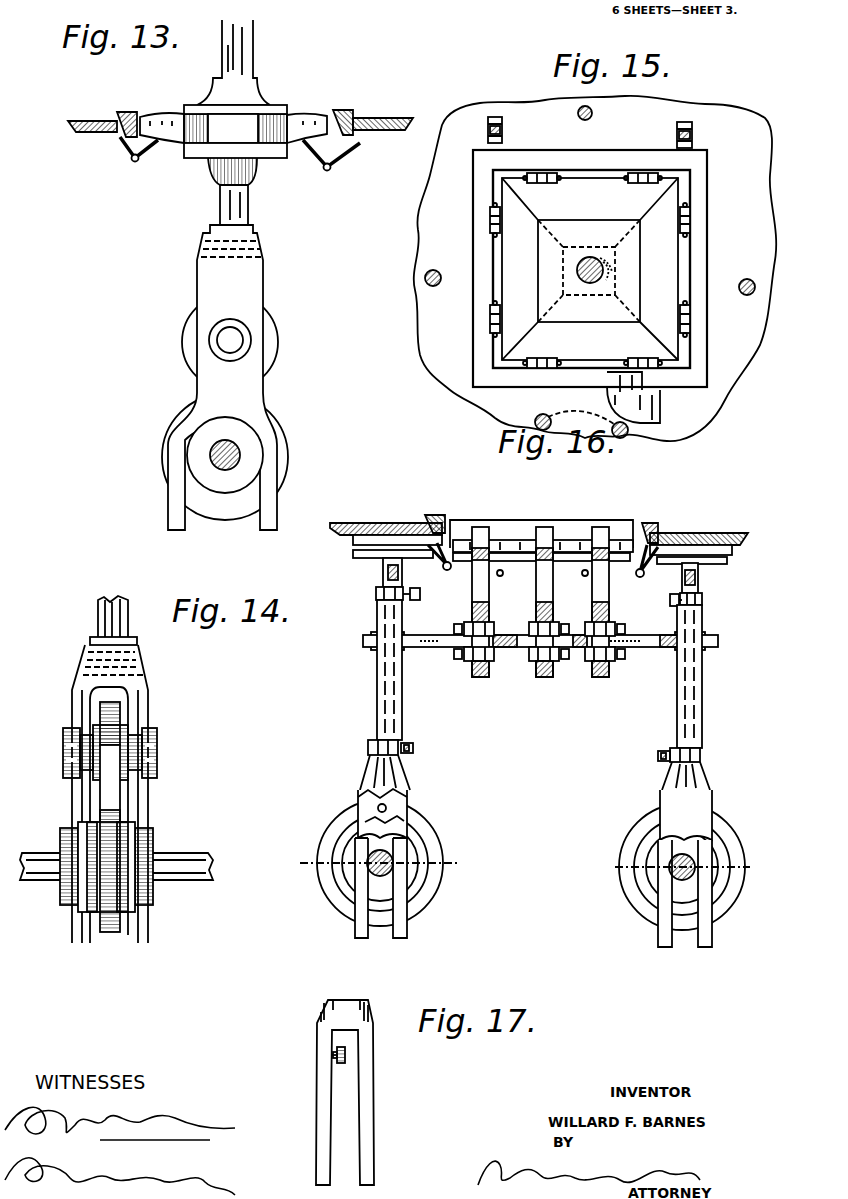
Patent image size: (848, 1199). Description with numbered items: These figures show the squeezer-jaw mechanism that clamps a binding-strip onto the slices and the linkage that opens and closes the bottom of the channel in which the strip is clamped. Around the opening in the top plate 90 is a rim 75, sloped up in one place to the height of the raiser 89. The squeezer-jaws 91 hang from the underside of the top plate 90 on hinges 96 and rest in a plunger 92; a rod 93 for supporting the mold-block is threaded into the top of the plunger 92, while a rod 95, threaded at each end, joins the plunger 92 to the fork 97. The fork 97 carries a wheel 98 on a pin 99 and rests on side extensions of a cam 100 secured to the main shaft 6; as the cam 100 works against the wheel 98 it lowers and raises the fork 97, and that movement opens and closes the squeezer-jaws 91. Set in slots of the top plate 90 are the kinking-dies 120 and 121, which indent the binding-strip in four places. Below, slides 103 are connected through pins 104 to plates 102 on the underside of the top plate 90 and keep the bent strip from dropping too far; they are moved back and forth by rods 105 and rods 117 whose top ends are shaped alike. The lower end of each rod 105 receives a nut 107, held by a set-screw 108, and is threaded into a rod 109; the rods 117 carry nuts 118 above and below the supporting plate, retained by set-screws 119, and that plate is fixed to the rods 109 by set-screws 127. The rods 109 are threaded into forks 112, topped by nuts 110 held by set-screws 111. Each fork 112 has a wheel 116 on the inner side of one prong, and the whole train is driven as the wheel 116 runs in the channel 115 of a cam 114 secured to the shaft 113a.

In FIG. 13, the main shaft 6 is at (222, 445).
In FIG. 14, the main shaft 6 is at (210, 873).
In FIG. 13, the rim 75 is at (243, 114).
In FIG. 15, the rim 75 is at (583, 158).
In FIG. 16, the rim 75 is at (661, 525).
In FIG. 15, the raiser 89 is at (647, 425).
In FIG. 13, the top plate 90 is at (95, 115).
In FIG. 15, the top plate 90 is at (595, 268).
In FIG. 16, the top plate 90 is at (390, 517).
In FIG. 13, the squeezer-jaws 91 is at (153, 117).
In FIG. 15, the squeezer-jaws 91 is at (591, 269).
In FIG. 13, the plunger 92 is at (235, 131).
In FIG. 15, the plunger 92 is at (589, 271).
In FIG. 13, the rod 93 is at (249, 54).
In FIG. 15, the rod 93 is at (570, 283).
In FIG. 13, the rod 95 is at (249, 201).
In FIG. 14, the rod 95 is at (98, 615).
In FIG. 13, the hinges 96 is at (150, 152).
In FIG. 15, the hinges 96 is at (540, 170).
In FIG. 16, the hinges 96 is at (445, 570).
In FIG. 13, the fork 97 is at (253, 267).
In FIG. 14, the fork 97 is at (138, 658).
In FIG. 13, the wheel 98 is at (182, 340).
In FIG. 14, the wheel 98 is at (128, 712).
In FIG. 13, the pin 99 is at (230, 331).
In FIG. 14, the pin 99 is at (138, 775).
In FIG. 13, the cam 100 is at (188, 462).
In FIG. 14, the cam 100 is at (150, 843).
In FIG. 16, the plates 102 is at (458, 540).
In FIG. 16, the slides 103 is at (385, 567).
In FIG. 16, the pins 104 is at (447, 537).
In FIG. 15, the rods 105 is at (437, 266).
In FIG. 16, the rods 105 is at (541, 581).
In FIG. 16, the nut 107 is at (378, 600).
In FIG. 16, the set-screw 108 is at (418, 600).
In FIG. 16, the rods 109 is at (378, 678).
In FIG. 16, the nuts 110 is at (370, 747).
In FIG. 16, the set-screws 111 is at (414, 748).
In FIG. 16, the forks 112 is at (413, 936).
In FIG. 17, the forks 112 is at (345, 1092).
In FIG. 16, the shaft 113a is at (516, 858).
In FIG. 16, the cams 114 is at (396, 808).
In FIG. 16, the channel 115 is at (440, 860).
In FIG. 16, the wheel 116 is at (408, 798).
In FIG. 17, the wheel 116 is at (342, 1065).
In FIG. 15, the rods 117 is at (578, 113).
In FIG. 16, the rods 117 is at (486, 605).
In FIG. 16, the nuts 118 is at (540, 626).
In FIG. 16, the set-screws 119 is at (452, 652).
In FIG. 15, the kinking-die 120 is at (488, 135).
In FIG. 16, the kinking-die 120 is at (717, 647).
In FIG. 15, the kinking-die 121 is at (502, 125).
In FIG. 16, the set-screws 127 is at (374, 650).